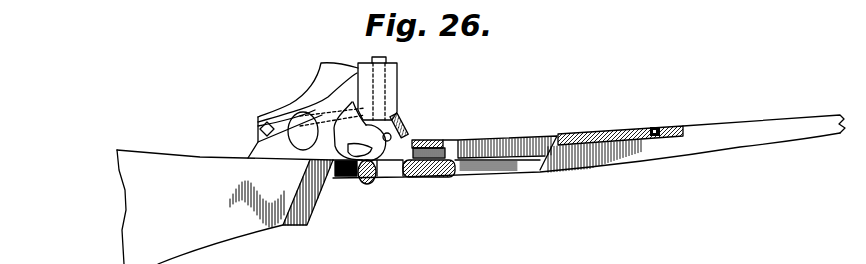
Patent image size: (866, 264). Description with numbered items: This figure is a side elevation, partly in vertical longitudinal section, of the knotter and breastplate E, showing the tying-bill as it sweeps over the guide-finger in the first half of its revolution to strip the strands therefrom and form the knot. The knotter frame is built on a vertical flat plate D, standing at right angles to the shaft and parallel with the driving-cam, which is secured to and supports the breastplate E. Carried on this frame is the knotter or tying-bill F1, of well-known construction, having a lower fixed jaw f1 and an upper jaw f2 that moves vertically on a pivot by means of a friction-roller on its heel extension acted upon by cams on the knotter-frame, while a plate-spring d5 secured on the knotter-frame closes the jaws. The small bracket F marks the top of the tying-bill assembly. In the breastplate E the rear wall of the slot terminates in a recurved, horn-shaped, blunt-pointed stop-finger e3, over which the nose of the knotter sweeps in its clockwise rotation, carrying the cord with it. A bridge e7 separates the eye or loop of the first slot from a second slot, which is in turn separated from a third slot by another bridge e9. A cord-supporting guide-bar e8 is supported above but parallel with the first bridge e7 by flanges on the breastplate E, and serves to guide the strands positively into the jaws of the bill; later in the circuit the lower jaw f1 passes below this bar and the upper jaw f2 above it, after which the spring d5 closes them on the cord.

The vertical flat plate D is at (311, 89).
The breastplate E is at (481, 189).
The breech block F is at (377, 80).
The plate-spring d5 is at (300, 131).
The lower fixed jaw f1 is at (360, 156).
The upper jaw f2 is at (362, 131).
The knotter or tying-bill F1 is at (413, 136).
The stop-finger e3 is at (372, 183).
The bridge e7 is at (420, 178).
The cord-supporting guide-bar e8 is at (443, 141).
The bridge e9 is at (604, 133).